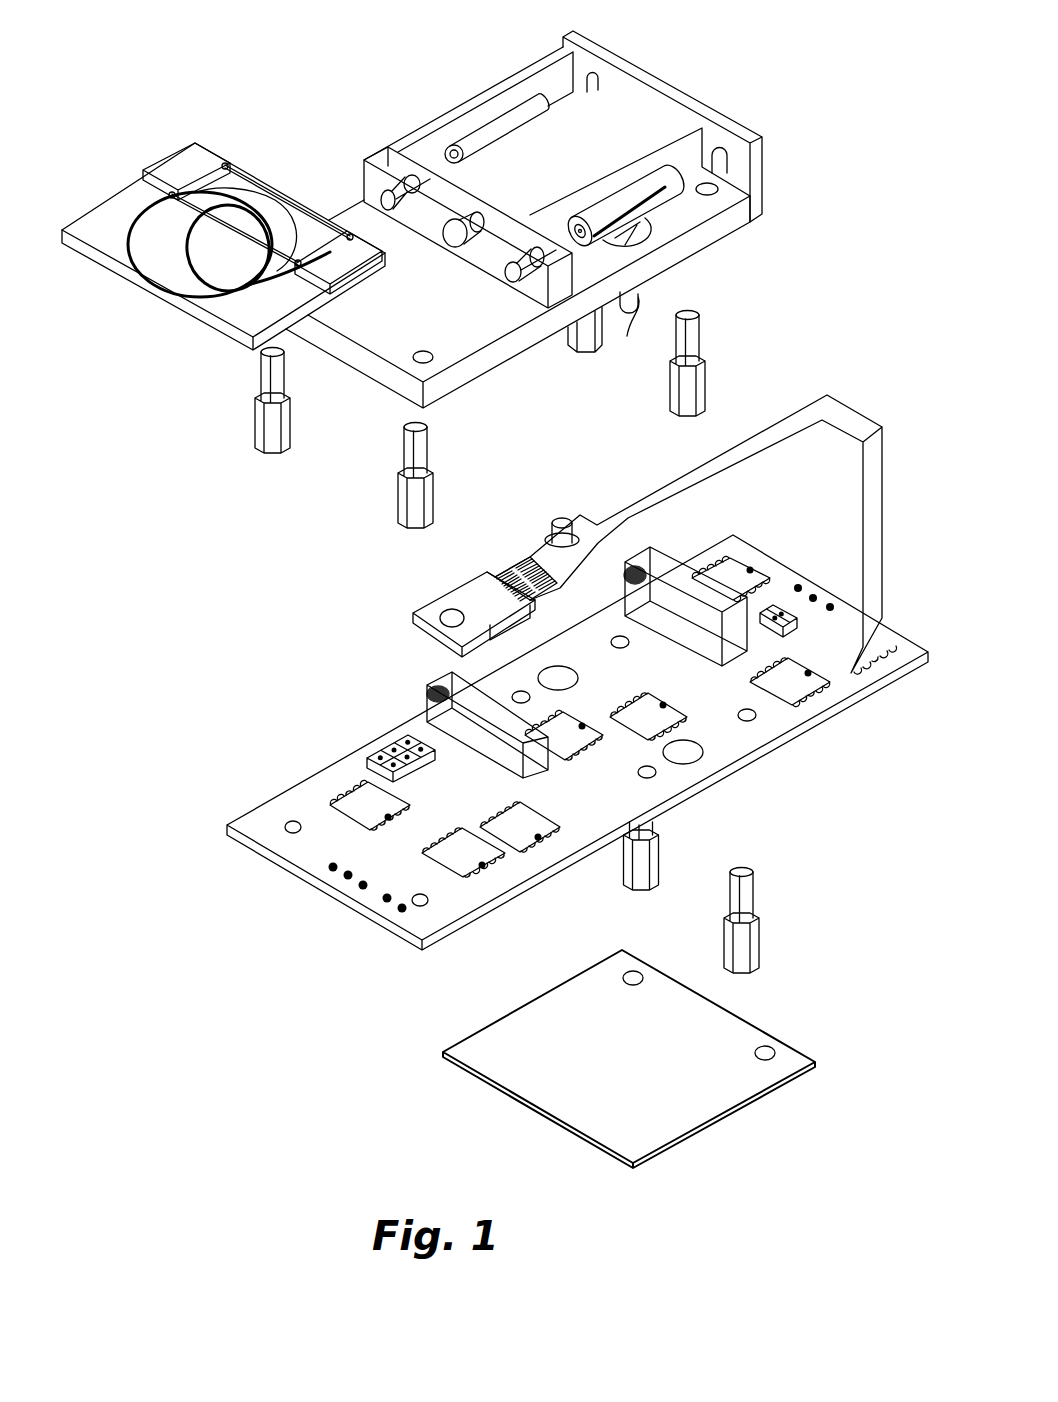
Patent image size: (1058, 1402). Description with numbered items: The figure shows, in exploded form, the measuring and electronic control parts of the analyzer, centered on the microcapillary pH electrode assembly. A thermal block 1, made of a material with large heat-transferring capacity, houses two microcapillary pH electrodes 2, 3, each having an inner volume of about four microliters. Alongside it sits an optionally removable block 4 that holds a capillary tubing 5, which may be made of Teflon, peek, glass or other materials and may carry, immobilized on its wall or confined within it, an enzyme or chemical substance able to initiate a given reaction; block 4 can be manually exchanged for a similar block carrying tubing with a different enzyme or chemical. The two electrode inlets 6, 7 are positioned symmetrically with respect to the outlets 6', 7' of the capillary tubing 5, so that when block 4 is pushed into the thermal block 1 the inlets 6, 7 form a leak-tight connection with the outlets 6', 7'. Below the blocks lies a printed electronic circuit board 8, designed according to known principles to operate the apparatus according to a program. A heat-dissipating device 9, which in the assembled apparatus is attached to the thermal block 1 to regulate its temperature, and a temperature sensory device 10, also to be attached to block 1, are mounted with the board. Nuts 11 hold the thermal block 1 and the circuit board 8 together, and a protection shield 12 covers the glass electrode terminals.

The thermal block 1 is at (490, 368).
The microcapillary pH electrode 2 is at (485, 100).
The microcapillary pH electrode 3 is at (680, 215).
The removable block 4 is at (123, 197).
The capillary tubing 5 is at (138, 272).
The electrode inlet 6 is at (468, 246).
The capillary tubing outlet 6' is at (269, 247).
The electrode inlet 7 is at (534, 126).
The capillary tubing outlet 7' is at (223, 190).
The printed electronic circuit board 8 is at (795, 755).
The heat-dissipating device 9 is at (452, 590).
The temperature sensory device 10 is at (557, 521).
The nuts 11 is at (250, 418).
The protection shield 12 is at (725, 1120).